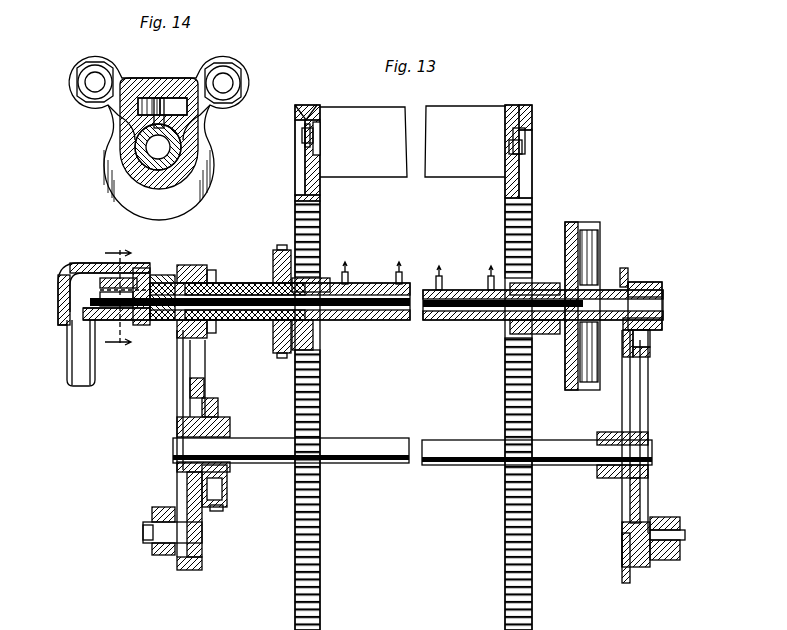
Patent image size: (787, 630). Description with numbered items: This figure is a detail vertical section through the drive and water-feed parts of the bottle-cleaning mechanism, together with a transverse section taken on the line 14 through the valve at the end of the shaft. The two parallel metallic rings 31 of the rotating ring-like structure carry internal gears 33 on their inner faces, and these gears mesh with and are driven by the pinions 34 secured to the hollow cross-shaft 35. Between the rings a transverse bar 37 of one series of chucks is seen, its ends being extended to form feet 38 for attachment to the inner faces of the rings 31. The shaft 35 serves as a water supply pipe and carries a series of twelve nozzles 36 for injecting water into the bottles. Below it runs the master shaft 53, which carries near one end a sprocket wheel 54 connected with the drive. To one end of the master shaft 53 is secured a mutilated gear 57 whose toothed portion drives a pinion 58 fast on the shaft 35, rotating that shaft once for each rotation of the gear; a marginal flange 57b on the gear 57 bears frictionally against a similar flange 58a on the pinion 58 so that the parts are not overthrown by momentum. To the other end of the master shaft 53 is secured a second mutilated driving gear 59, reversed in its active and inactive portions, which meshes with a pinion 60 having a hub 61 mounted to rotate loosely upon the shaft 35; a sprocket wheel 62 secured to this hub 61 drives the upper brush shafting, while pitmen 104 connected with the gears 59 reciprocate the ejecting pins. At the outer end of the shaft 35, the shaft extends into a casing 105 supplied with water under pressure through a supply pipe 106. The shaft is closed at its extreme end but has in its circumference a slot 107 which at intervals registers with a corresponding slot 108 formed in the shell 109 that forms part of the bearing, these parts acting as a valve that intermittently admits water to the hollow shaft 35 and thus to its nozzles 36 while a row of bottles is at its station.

In FIG. 13, the section line 14 is at (118, 299).
In FIG. 13, the metallic rings 31 is at (295, 168).
In FIG. 13, the internal gears 33 is at (320, 222).
In FIG. 13, the pinions 34 is at (317, 280).
In FIG. 13, the cross-shaft 35 is at (458, 320).
In FIG. 14, the cross-shaft 35 is at (170, 160).
In FIG. 13, the nozzles 36 is at (398, 272).
In FIG. 13, the transverse bar 37 is at (412, 141).
In FIG. 13, the feet 38 is at (313, 150).
In FIG. 13, the master shaft 53 is at (330, 462).
In FIG. 13, the sprocket wheel 54 is at (227, 502).
In FIG. 13, the mutilated gear 57 is at (640, 408).
In FIG. 13, the marginal flange 57b is at (622, 572).
In FIG. 13, the pinion 58 is at (635, 280).
In FIG. 13, the flange 58a is at (624, 268).
In FIG. 13, the driving gear 59 is at (177, 413).
In FIG. 13, the pinion 60 is at (186, 265).
In FIG. 13, the hub 61 is at (230, 283).
In FIG. 13, the sprocket wheel 62 is at (278, 246).
In FIG. 13, the pitmen 104 is at (162, 510).
In FIG. 13, the casing 105 is at (62, 268).
In FIG. 13, the supply pipe 106 is at (76, 386).
In FIG. 13, the slot 107 is at (130, 318).
In FIG. 14, the slot 107 is at (170, 148).
In FIG. 13, the slot 108 is at (130, 280).
In FIG. 14, the slot 108 is at (160, 100).
In FIG. 13, the shell 109 is at (95, 278).
In FIG. 14, the shell 109 is at (180, 114).